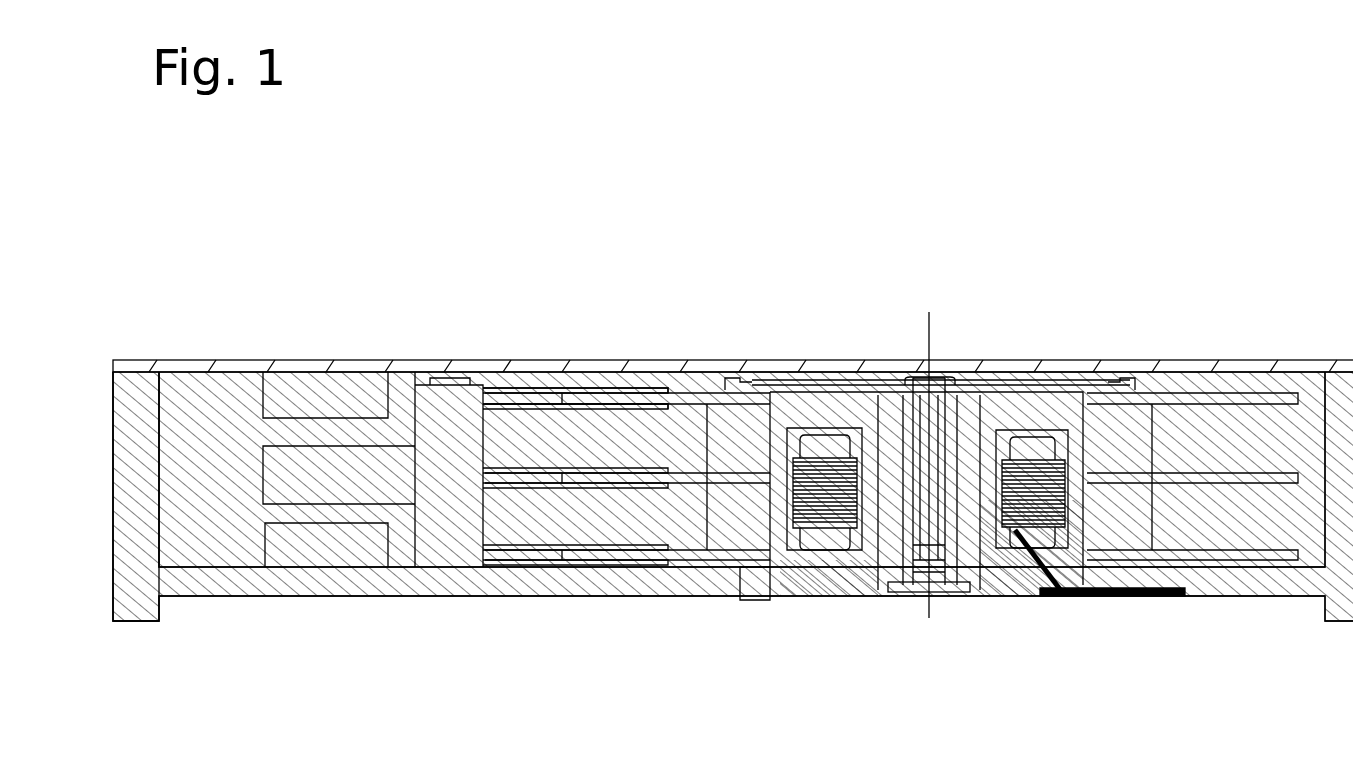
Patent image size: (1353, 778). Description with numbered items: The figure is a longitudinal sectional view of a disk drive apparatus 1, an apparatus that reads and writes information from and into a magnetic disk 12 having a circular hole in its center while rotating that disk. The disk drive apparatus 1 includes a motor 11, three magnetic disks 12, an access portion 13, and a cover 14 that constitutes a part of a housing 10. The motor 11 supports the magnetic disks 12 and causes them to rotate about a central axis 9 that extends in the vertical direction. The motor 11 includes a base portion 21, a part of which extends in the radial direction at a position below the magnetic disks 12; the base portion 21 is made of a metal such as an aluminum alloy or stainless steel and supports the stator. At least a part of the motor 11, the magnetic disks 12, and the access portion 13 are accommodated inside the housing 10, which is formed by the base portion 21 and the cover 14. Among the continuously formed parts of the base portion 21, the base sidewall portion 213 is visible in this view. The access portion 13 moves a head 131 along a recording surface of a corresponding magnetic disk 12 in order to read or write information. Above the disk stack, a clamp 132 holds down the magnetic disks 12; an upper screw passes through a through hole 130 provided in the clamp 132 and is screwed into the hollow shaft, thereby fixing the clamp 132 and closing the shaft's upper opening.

The disk drive apparatus 1 is at (733, 327).
The central axis 9 is at (927, 322).
The housing 10 is at (236, 351).
The motor 11 is at (880, 385).
The magnetic disk 12 is at (1198, 475).
The access portion 13 is at (572, 450).
The cover 14 is at (407, 367).
The base portion 21 is at (1234, 580).
The through hole 130 is at (940, 376).
The head 131 is at (645, 467).
The clamp 132 is at (1000, 382).
The base sidewall portion 213 is at (137, 490).